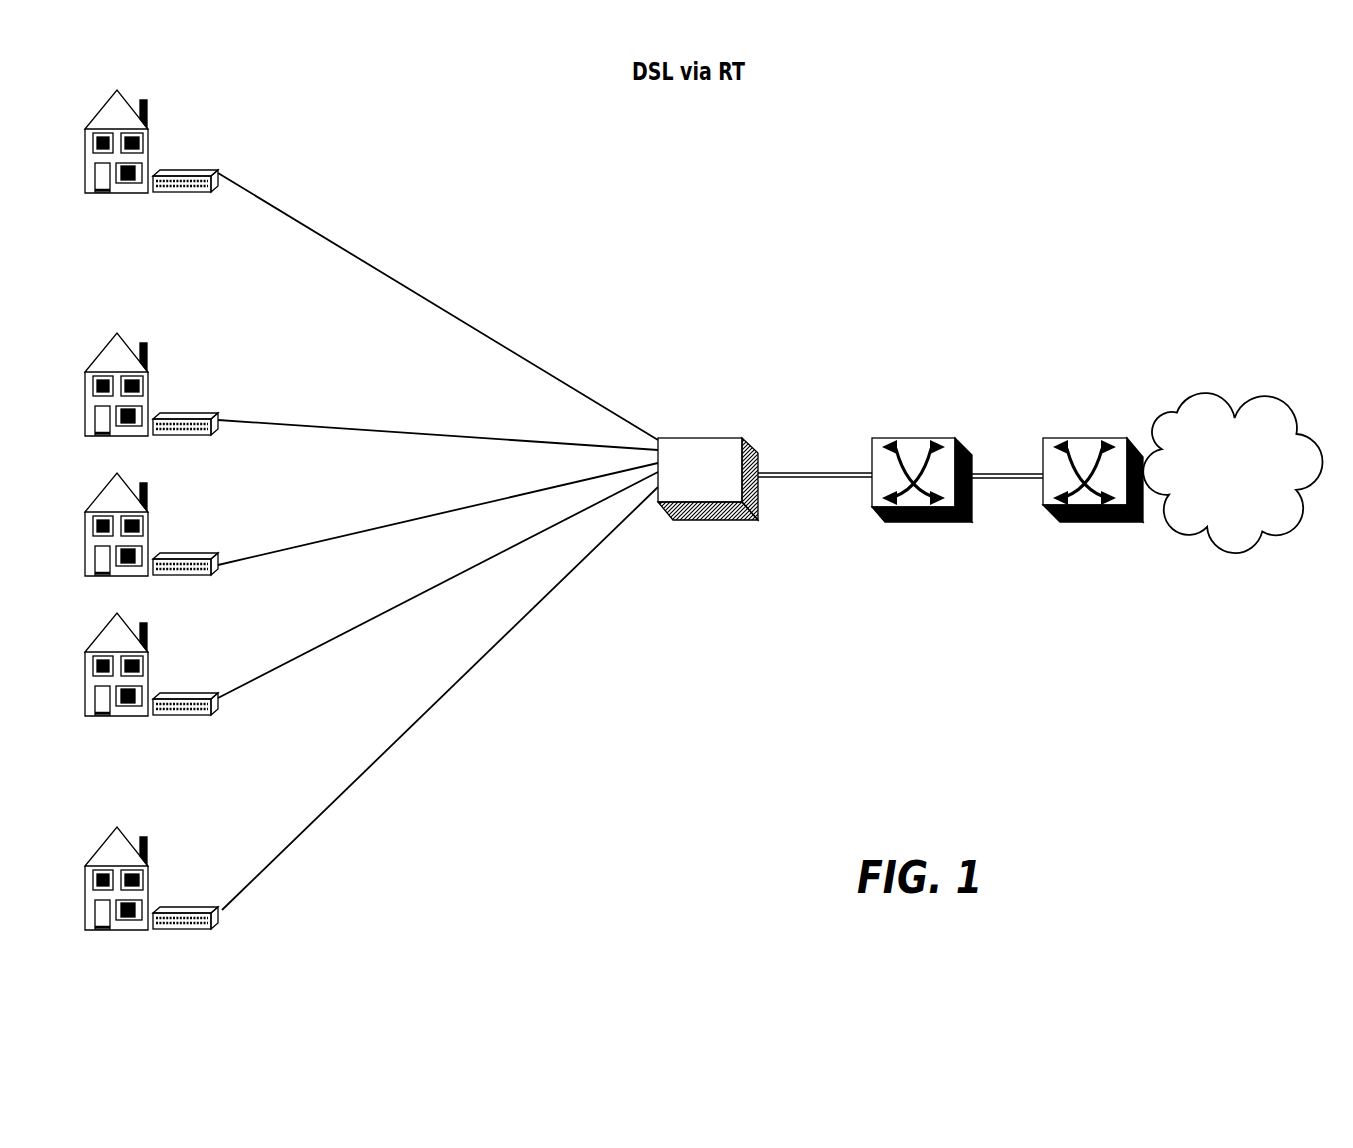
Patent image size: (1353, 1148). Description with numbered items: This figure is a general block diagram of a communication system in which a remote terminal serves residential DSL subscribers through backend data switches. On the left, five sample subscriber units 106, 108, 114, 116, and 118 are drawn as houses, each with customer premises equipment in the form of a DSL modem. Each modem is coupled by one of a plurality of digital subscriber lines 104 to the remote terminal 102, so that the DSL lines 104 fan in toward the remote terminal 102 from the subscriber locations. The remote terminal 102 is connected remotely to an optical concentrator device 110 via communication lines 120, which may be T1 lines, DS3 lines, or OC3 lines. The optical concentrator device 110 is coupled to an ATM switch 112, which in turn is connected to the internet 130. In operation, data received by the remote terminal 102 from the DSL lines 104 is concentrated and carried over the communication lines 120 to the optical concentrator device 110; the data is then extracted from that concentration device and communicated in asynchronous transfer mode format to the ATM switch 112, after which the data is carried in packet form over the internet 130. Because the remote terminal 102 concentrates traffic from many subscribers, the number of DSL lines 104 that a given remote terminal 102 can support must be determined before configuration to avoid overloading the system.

The remote terminal 102 is at (713, 457).
The digital subscriber lines 104 is at (438, 541).
The subscriber unit 106 is at (156, 126).
The subscriber unit 108 is at (156, 370).
The optical concentrator device 110 is at (934, 484).
The ATM switch 112 is at (1100, 466).
The subscriber unit 114 is at (156, 513).
The subscriber unit 116 is at (156, 653).
The subscriber unit 118 is at (159, 866).
The communication lines 120 is at (815, 487).
The internet 130 is at (1232, 455).